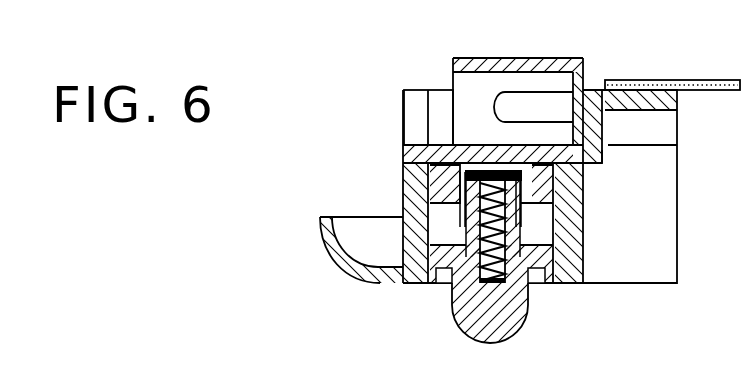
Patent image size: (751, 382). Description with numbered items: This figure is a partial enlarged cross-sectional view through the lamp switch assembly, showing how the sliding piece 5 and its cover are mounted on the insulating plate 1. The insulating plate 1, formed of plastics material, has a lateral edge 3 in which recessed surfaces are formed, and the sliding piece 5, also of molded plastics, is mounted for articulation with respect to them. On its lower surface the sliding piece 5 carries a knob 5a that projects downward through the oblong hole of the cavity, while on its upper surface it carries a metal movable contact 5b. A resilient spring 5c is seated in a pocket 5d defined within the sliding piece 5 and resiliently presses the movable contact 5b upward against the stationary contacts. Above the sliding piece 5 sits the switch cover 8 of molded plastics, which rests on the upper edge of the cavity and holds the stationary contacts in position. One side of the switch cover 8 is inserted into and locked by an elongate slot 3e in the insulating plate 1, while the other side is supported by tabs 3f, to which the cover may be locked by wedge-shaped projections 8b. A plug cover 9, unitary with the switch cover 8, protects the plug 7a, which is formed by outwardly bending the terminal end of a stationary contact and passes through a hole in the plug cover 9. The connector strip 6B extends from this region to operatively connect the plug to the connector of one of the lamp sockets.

The insulating plate 1 is at (650, 157).
The lateral edge 3 is at (590, 98).
The elongate slot 3e is at (594, 165).
The tabs 3f is at (413, 102).
The sliding piece 5 is at (443, 184).
The knob 5a is at (515, 303).
The movable contact 5b is at (497, 172).
The resilient spring 5c is at (508, 218).
The pocket 5d is at (456, 298).
The connector strip 6B is at (708, 80).
The plug 7a is at (550, 92).
The switch cover 8 is at (608, 110).
The wedge-shaped projections 8b is at (435, 143).
The plug cover 9 is at (493, 58).